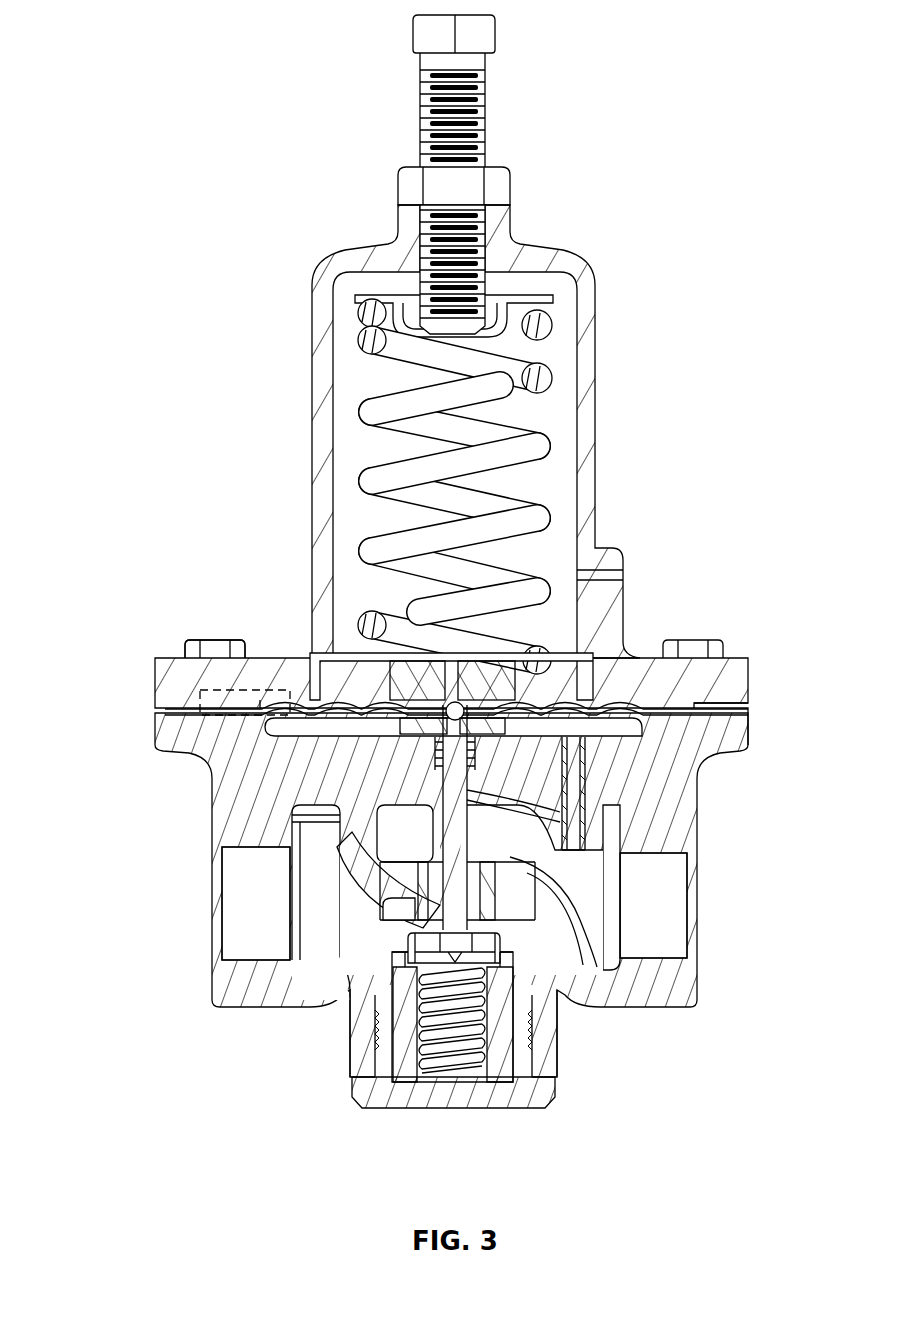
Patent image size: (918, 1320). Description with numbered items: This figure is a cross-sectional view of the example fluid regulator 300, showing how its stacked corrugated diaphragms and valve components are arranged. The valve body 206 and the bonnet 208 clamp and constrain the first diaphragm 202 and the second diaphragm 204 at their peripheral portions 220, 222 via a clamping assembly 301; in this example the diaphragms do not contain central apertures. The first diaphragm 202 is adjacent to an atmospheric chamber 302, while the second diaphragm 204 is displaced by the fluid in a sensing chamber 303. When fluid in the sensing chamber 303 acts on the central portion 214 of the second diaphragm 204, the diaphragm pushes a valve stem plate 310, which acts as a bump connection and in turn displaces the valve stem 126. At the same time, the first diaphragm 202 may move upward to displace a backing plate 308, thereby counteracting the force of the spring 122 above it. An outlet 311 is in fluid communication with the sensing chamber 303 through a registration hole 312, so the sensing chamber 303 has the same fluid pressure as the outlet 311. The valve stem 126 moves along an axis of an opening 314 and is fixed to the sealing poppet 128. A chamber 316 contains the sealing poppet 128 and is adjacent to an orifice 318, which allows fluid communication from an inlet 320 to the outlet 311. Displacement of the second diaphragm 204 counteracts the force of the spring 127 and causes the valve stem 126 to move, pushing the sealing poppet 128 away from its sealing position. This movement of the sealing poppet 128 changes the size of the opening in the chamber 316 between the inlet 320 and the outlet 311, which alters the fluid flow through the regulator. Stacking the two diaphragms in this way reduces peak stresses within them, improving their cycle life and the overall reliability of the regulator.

The pressure regulator 300 is at (600, 182).
The spring 122 is at (390, 398).
The first diaphragm 202 is at (322, 690).
The atmospheric chamber 302 is at (262, 705).
The peripheral portion 220 is at (188, 700).
The backing plate 308 is at (487, 668).
The bonnet 208 is at (680, 700).
The valve body 206 is at (715, 737).
The clamping assembly 301 is at (205, 704).
The peripheral portion 222 is at (300, 718).
The sensing chamber 303 is at (365, 727).
The valve stem plate 310 is at (485, 745).
The second diaphragm 204 is at (440, 734).
The registration hole 312 is at (573, 813).
The opening 314 is at (500, 822).
The central portion 214 is at (395, 905).
The outlet 311 is at (655, 922).
The inlet 320 is at (250, 945).
The orifice 318 is at (515, 868).
The sealing poppet 128 is at (412, 968).
The chamber 316 is at (457, 915).
The valve stem 126 is at (497, 1000).
The spring 127 is at (440, 1062).